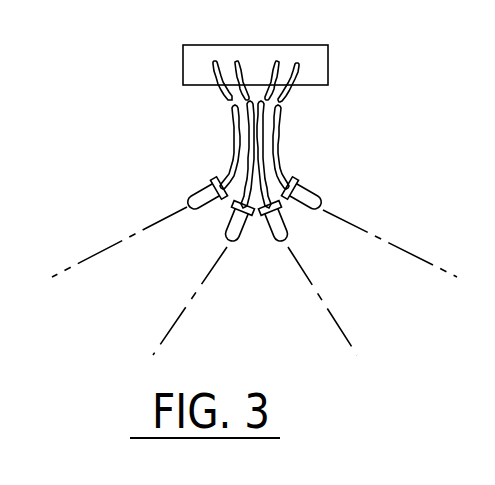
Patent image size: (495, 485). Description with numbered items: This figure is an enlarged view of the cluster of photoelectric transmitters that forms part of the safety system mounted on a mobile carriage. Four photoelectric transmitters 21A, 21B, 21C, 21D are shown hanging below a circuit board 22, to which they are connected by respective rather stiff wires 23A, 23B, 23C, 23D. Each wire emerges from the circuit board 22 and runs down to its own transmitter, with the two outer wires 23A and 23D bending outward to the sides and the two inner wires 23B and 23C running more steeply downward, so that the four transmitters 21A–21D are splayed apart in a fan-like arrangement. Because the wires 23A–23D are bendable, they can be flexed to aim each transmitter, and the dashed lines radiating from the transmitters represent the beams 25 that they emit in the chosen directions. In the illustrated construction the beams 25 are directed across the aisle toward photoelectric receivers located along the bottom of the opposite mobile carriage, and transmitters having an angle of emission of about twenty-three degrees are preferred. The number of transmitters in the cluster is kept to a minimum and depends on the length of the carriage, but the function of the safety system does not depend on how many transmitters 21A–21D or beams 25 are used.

The circuit board 22 is at (188, 75).
The wire 23A is at (233, 105).
The wire 23B is at (238, 110).
The wire 23C is at (268, 120).
The wire 23D is at (280, 150).
The photoelectric transmitter 21A is at (197, 202).
The photoelectric transmitter 21B is at (228, 243).
The photoelectric transmitter 21C is at (283, 235).
The photoelectric transmitter 21D is at (315, 198).
The beam 25 is at (417, 257).